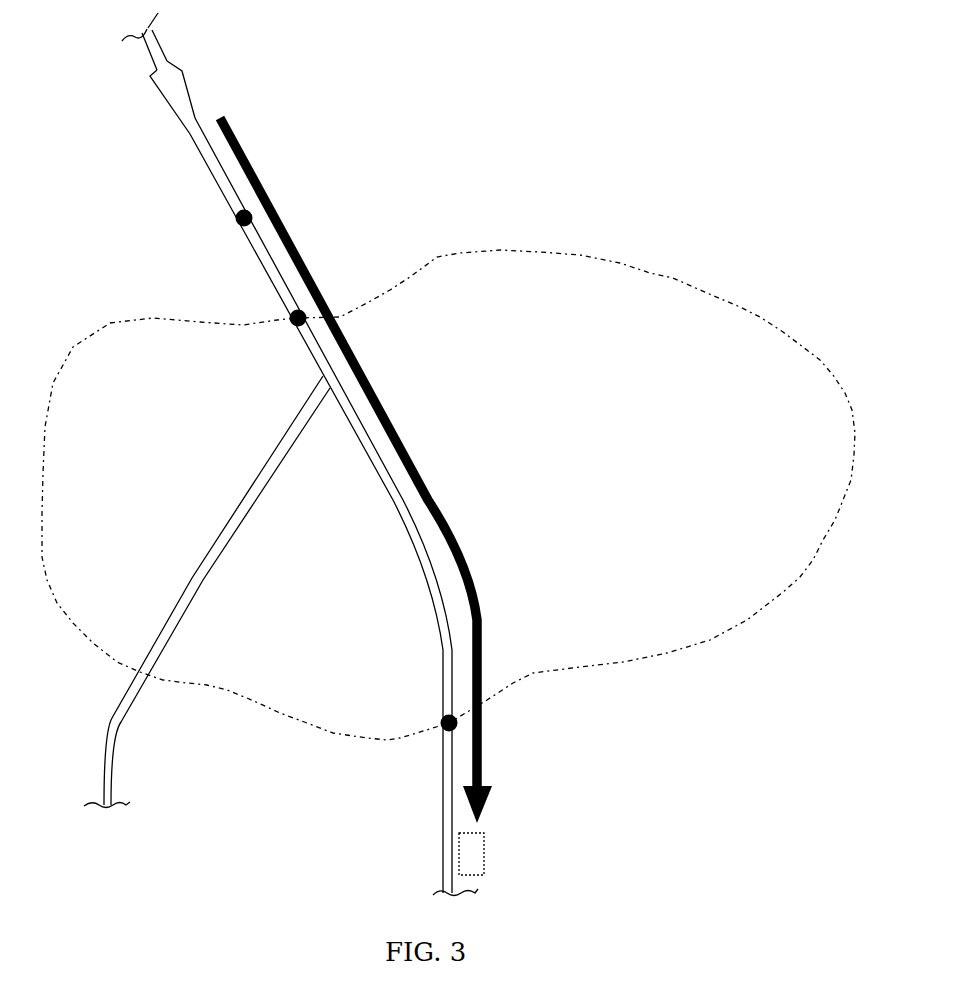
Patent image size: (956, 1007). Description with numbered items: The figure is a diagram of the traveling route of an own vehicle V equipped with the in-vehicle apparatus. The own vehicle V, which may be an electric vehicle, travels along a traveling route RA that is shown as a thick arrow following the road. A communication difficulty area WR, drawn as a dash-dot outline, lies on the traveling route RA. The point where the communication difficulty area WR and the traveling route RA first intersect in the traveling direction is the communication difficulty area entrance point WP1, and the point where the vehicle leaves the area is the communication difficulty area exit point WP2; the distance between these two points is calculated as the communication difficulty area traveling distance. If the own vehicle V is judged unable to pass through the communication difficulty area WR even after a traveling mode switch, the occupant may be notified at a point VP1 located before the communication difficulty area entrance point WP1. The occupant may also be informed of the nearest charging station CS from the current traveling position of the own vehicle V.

The own vehicle V is at (186, 72).
The point VP1 is at (247, 211).
The traveling route RA is at (295, 211).
The communication difficulty area entrance point WP1 is at (302, 312).
The communication difficulty area exit point WP2 is at (441, 727).
The communication difficulty area WR is at (678, 272).
The charging station CS is at (472, 854).